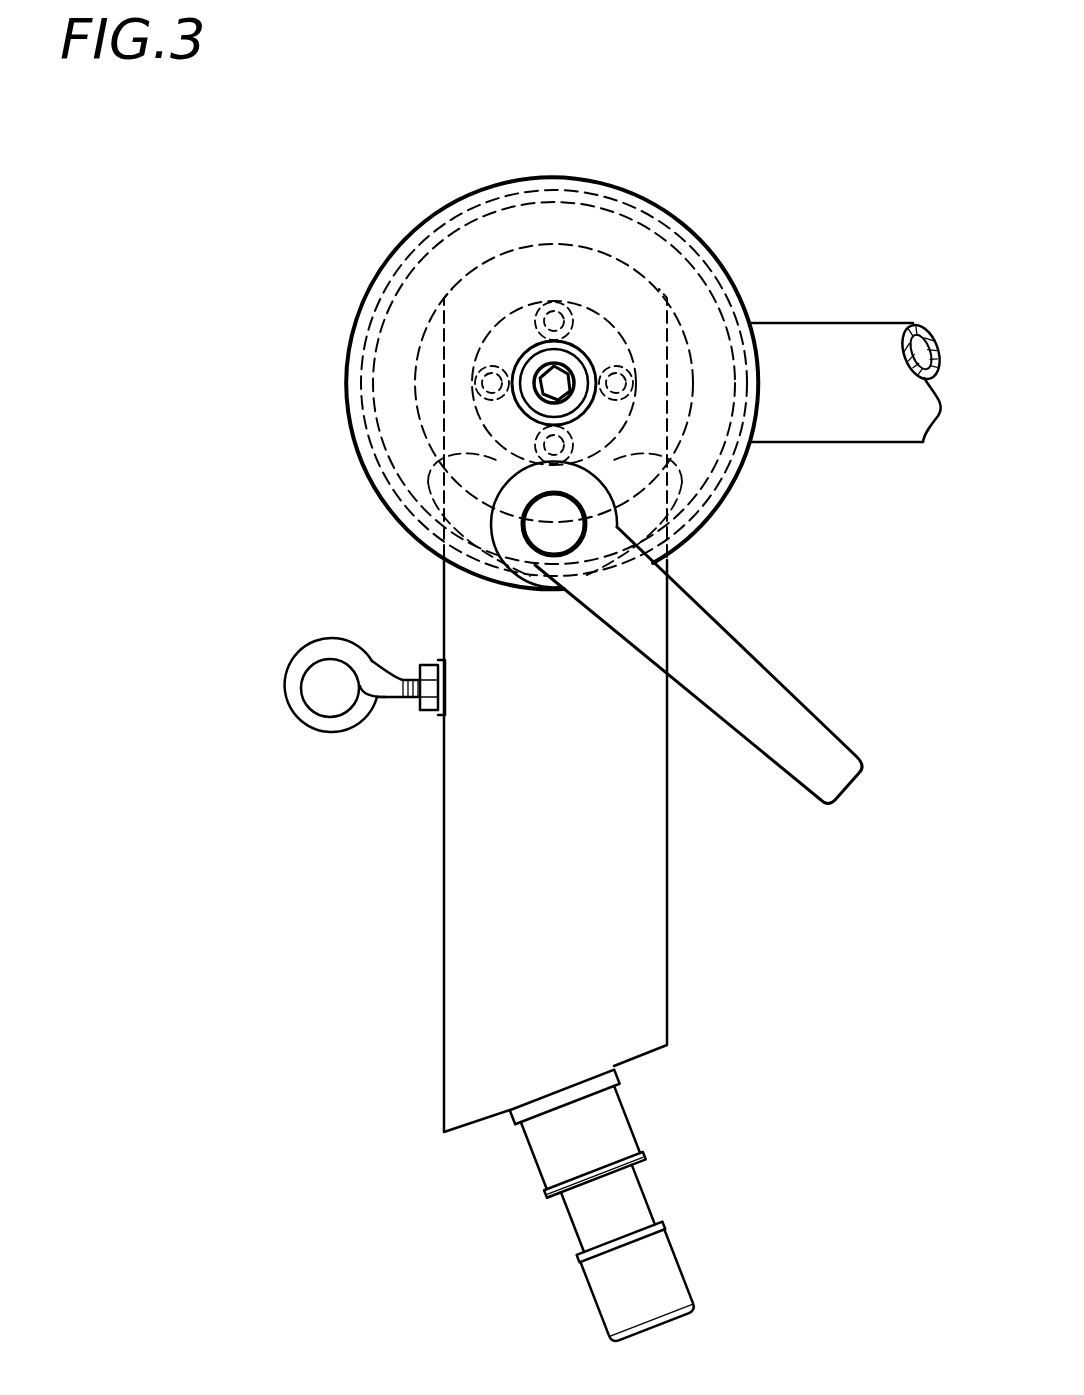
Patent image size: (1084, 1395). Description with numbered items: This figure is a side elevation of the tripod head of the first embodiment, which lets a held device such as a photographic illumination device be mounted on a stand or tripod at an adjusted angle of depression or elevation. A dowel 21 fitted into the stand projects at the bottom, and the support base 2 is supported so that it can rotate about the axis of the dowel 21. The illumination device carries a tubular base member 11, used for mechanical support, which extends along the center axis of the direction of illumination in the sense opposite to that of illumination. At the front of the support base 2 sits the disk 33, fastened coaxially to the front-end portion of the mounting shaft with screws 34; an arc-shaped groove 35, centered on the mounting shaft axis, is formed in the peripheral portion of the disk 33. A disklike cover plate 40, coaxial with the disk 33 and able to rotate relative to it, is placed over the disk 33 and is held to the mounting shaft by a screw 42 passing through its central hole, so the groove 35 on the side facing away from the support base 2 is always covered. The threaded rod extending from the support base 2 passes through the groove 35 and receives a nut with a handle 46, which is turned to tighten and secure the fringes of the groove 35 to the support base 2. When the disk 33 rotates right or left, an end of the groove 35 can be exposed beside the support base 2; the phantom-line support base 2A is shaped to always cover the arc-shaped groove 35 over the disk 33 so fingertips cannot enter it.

The support base 2 is at (438, 947).
The support base 2A is at (376, 383).
The tubular base member 11 is at (862, 338).
The dowel 21 is at (659, 1276).
The disk 33 is at (667, 215).
The screws 34 is at (542, 304).
The arc-shaped groove 35 is at (676, 492).
The cover plate 40 is at (428, 280).
The screw 42 is at (550, 380).
The handle 46 is at (797, 713).